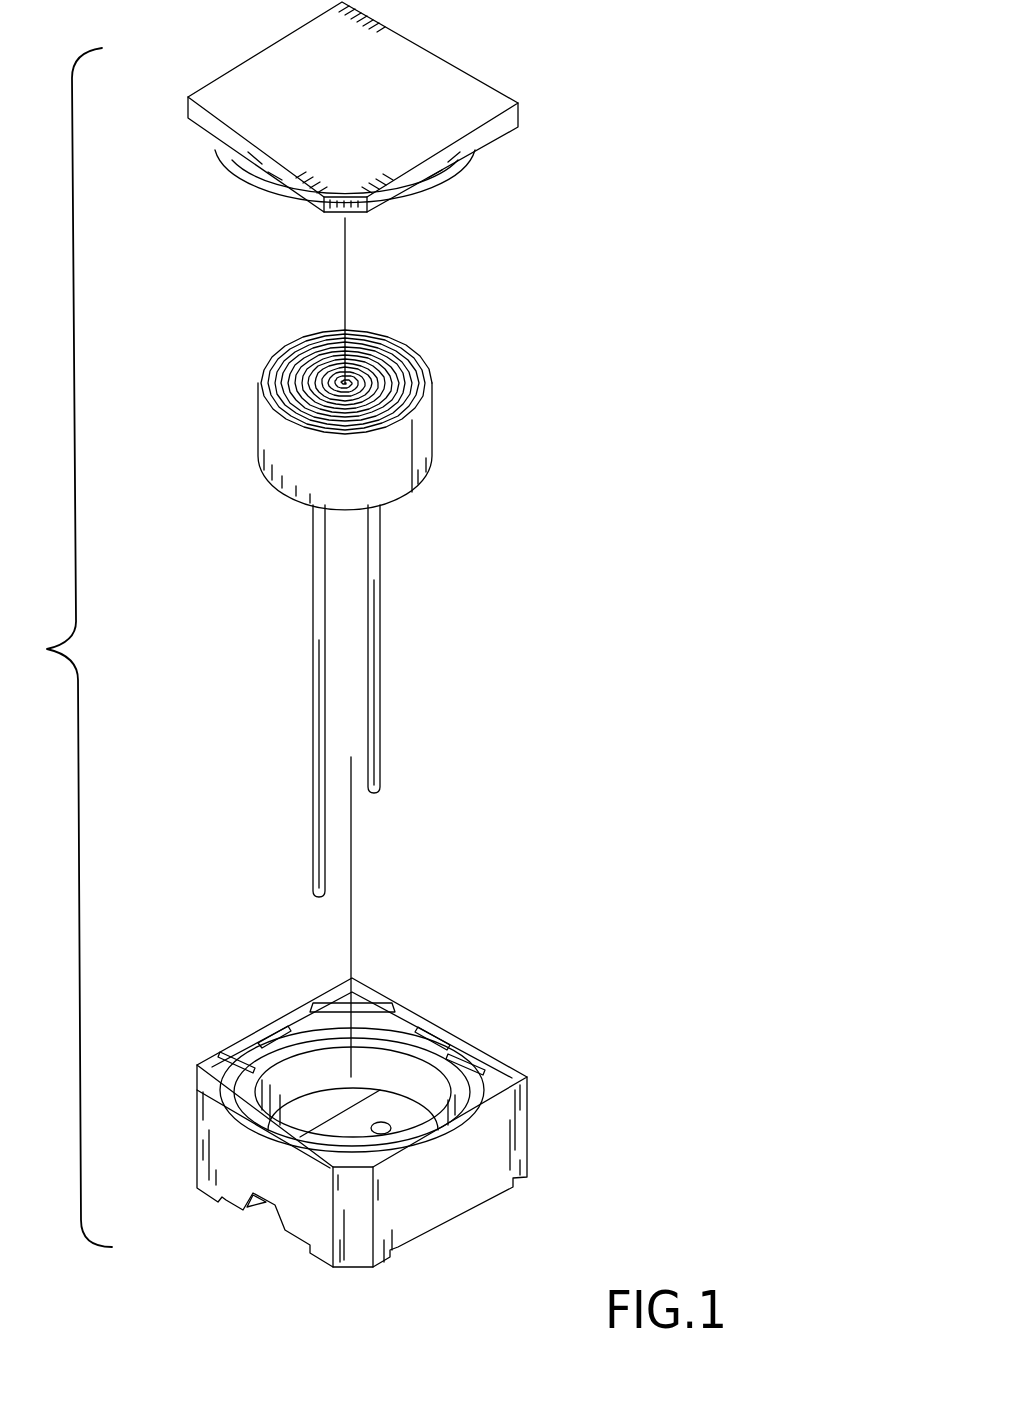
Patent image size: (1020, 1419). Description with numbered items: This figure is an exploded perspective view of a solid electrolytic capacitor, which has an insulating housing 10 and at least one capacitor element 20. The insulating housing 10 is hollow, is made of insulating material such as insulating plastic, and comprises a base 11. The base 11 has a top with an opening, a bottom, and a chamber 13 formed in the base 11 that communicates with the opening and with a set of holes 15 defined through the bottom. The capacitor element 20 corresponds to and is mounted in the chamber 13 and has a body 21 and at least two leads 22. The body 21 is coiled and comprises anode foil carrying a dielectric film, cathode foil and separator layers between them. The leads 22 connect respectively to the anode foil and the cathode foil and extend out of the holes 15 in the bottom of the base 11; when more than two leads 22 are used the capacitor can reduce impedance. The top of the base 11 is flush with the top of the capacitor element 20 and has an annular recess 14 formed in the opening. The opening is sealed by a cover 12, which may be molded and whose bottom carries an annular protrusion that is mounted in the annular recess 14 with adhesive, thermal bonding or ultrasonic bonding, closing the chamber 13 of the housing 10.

The insulating housing 10 is at (548, 1060).
The base 11 is at (512, 1138).
The cover 12 is at (437, 72).
The chamber 13 is at (311, 1074).
The annular recess 14 is at (367, 1015).
The holes 15 is at (380, 1122).
The capacitor element 20 is at (475, 388).
The body 21 is at (268, 440).
The leads 22 is at (317, 677).